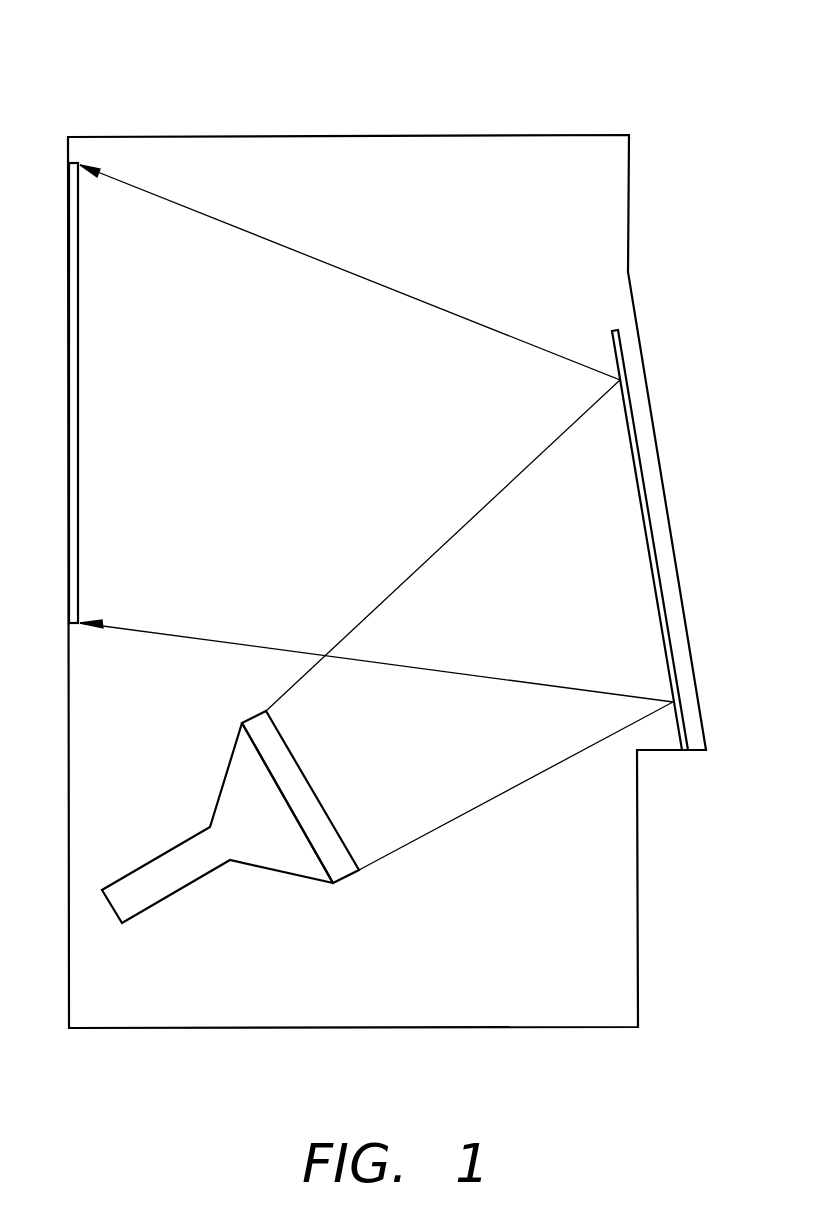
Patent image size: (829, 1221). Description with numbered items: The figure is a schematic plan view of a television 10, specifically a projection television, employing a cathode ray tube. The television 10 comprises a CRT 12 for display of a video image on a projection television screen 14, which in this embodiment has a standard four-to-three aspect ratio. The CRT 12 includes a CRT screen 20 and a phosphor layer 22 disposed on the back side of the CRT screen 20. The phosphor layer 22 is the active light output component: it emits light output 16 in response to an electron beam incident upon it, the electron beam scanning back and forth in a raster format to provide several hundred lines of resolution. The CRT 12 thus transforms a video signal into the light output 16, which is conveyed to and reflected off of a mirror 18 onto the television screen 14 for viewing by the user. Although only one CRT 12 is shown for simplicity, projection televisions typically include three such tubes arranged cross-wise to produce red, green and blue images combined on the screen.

The television 10 is at (597, 72).
The CRT 12 is at (283, 855).
The projection television screen 14 is at (78, 335).
The light output 16 is at (497, 797).
The mirror 18 is at (648, 527).
The CRT screen 20 is at (353, 877).
The phosphor layer 22 is at (260, 760).